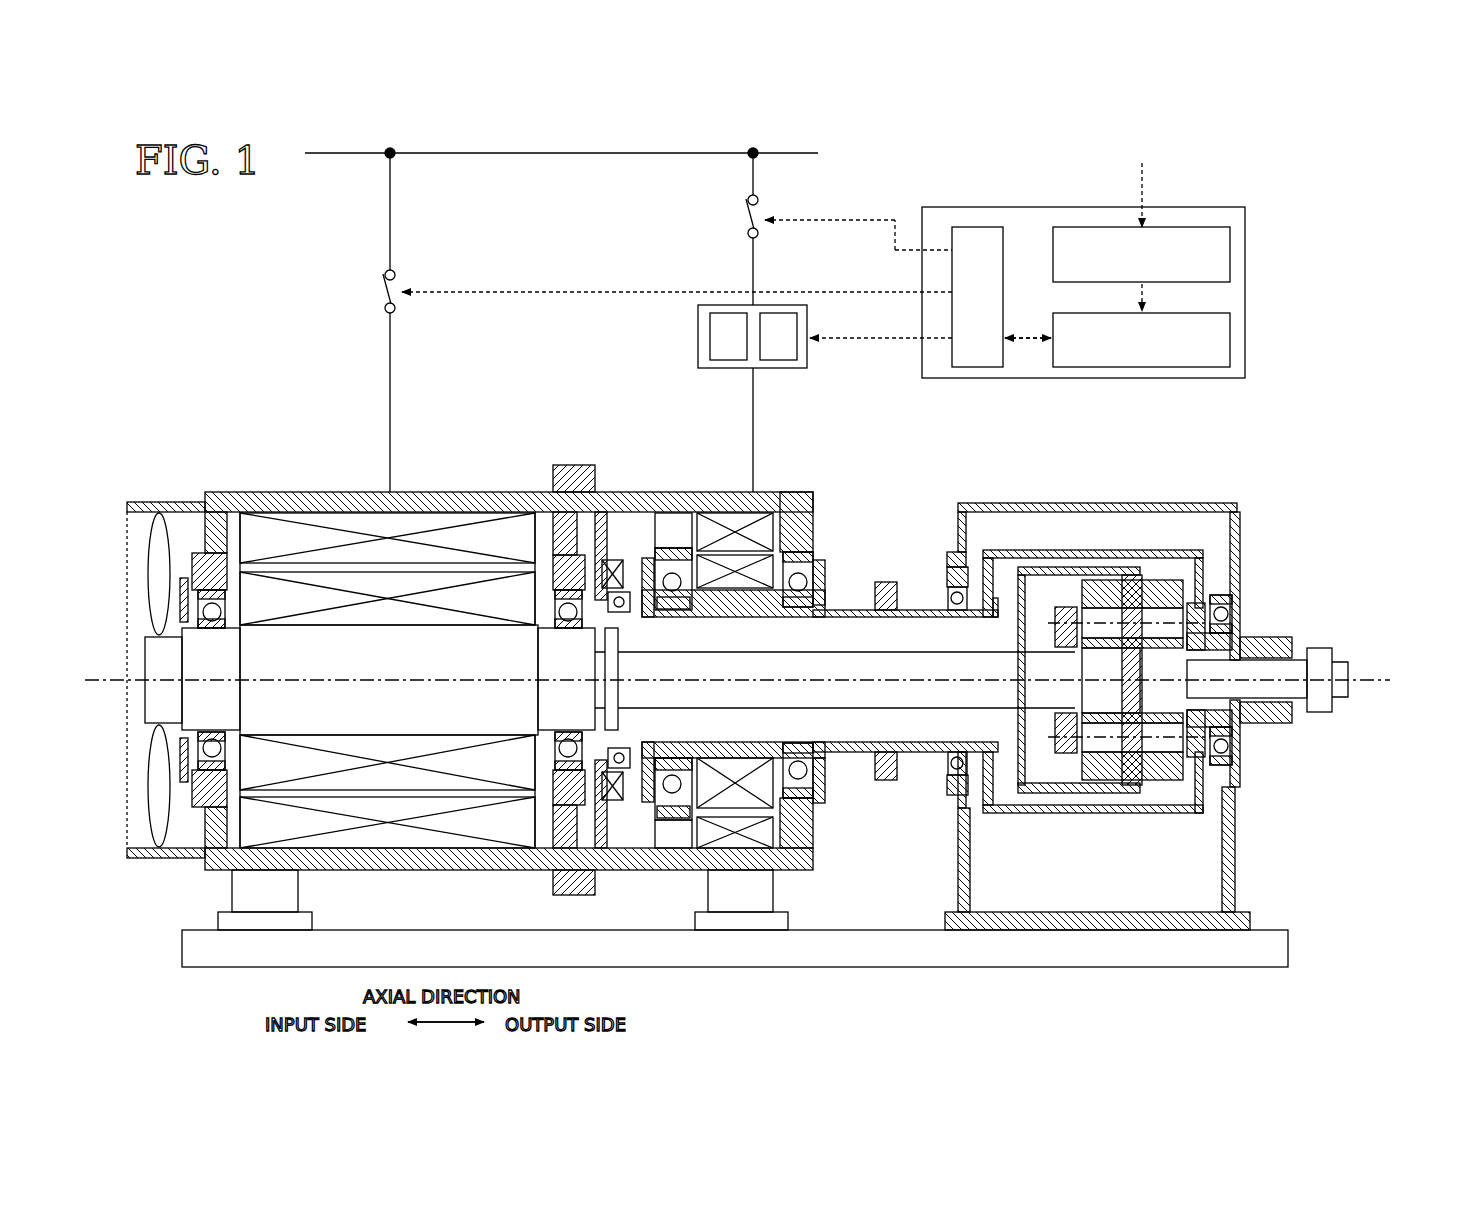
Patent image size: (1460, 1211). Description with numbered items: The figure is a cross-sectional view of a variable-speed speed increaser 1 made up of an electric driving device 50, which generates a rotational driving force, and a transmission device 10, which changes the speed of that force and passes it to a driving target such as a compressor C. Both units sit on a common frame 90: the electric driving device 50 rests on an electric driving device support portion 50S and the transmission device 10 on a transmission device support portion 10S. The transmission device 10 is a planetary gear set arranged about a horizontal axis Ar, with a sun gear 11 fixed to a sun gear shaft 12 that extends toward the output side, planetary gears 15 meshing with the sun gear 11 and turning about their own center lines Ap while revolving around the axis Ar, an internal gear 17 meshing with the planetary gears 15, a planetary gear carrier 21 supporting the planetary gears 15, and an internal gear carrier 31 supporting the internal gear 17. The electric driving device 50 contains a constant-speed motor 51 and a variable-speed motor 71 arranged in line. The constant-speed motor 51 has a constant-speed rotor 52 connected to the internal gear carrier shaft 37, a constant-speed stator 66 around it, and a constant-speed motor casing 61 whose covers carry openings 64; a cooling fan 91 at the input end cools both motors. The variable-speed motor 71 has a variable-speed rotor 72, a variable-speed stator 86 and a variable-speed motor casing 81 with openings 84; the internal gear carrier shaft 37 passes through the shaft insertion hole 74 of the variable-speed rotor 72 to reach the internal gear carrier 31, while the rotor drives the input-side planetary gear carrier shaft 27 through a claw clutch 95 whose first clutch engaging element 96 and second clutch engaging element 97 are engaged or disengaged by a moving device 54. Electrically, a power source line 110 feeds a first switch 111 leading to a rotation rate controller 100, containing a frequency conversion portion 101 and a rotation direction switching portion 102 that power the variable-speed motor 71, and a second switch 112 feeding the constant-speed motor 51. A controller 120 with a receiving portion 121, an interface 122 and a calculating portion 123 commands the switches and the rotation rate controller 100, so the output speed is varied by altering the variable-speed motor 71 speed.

The variable-speed speed increaser 1 is at (1308, 194).
The transmission device 10 is at (1234, 488).
The transmission device support portion 10S is at (1232, 866).
The sun gear 11 is at (1182, 706).
The sun gear shaft 12 is at (1300, 700).
The planetary gears 15 is at (1205, 618).
The internal gear 17 is at (1160, 600).
The planetary gear carrier 21 is at (1199, 600).
The input-side planetary gear carrier shaft 27 is at (966, 608).
The internal gear carrier 31 is at (1082, 795).
The internal gear carrier shaft 37 is at (988, 690).
The electric driving device 50 is at (212, 482).
The electric driving device support portion 50S is at (292, 890).
The constant-speed motor 51 is at (258, 486).
The constant-speed rotor 52 is at (492, 648).
The moving device 54 is at (630, 815).
The constant-speed motor casing 61 is at (432, 498).
The openings 64 is at (205, 525).
The constant-speed stator 66 is at (316, 538).
The variable-speed motor 71 is at (788, 490).
The variable-speed rotor 72 is at (736, 772).
The shaft insertion hole 74 is at (652, 612).
The variable-speed motor casing 81 is at (620, 853).
The openings 84 is at (668, 535).
The variable-speed stator 86 is at (708, 830).
The frame 90 is at (1270, 948).
The cooling fan 91 is at (162, 830).
The claw clutch 95 is at (887, 580).
The first clutch engaging element 96 is at (886, 782).
The second clutch engaging element 97 is at (955, 778).
The rotation rate controller 100 is at (808, 365).
The frequency conversion portion 101 is at (730, 312).
The rotation direction switching portion 102 is at (780, 312).
The power source line 110 is at (594, 158).
The first switch 111 is at (765, 207).
The second switch 112 is at (398, 290).
The controller 120 is at (1222, 204).
The receiving portion 121 is at (1232, 252).
The interface 122 is at (992, 226).
The calculating portion 123 is at (1232, 338).
The center lines of planetary gears Ap is at (1090, 618).
The compressor C is at (1325, 650).
The axis Ar is at (1380, 680).